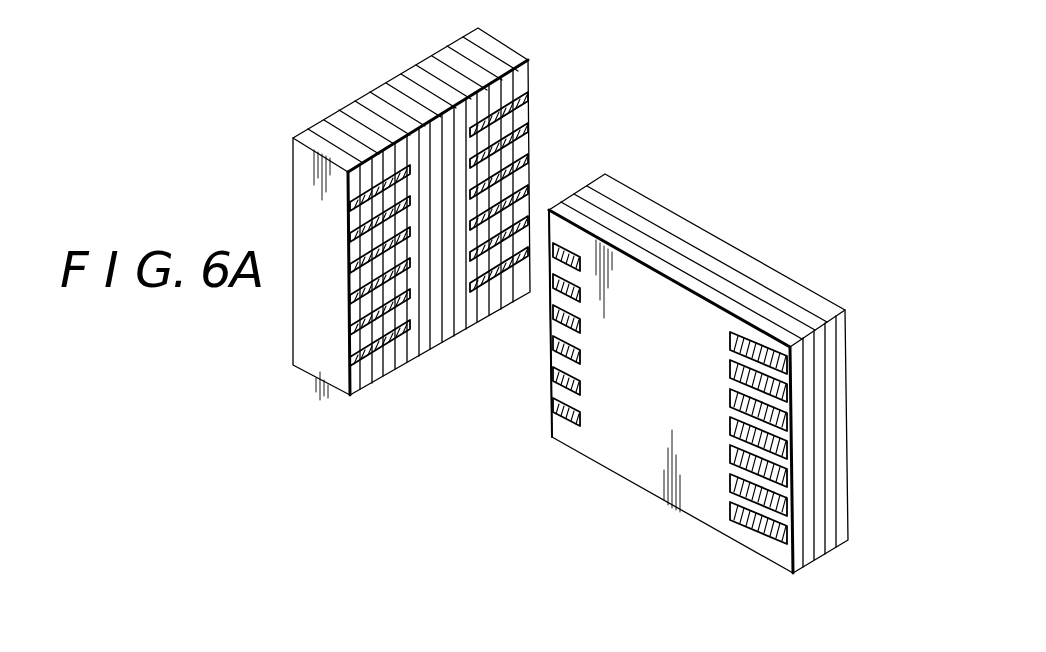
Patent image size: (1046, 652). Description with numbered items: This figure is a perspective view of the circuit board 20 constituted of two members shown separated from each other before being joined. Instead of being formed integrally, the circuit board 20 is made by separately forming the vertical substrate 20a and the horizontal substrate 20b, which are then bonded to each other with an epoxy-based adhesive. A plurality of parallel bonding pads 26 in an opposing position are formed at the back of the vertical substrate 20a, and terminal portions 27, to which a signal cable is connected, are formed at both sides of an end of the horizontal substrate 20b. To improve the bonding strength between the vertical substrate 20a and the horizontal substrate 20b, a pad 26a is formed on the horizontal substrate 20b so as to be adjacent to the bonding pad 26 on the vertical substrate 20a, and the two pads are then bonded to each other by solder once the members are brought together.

The circuit board 20 is at (629, 137).
The vertical substrate 20a is at (493, 63).
The horizontal substrate 20b is at (727, 267).
The bonding pads 26 is at (532, 173).
The pad 26a is at (553, 350).
The terminal portions 27 is at (785, 428).